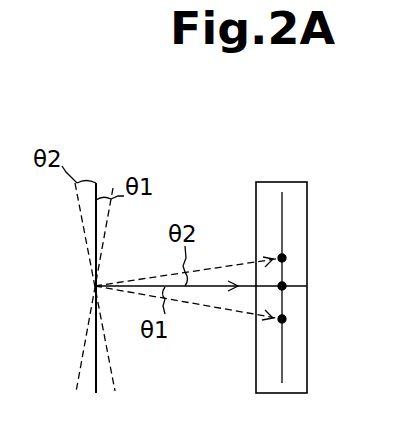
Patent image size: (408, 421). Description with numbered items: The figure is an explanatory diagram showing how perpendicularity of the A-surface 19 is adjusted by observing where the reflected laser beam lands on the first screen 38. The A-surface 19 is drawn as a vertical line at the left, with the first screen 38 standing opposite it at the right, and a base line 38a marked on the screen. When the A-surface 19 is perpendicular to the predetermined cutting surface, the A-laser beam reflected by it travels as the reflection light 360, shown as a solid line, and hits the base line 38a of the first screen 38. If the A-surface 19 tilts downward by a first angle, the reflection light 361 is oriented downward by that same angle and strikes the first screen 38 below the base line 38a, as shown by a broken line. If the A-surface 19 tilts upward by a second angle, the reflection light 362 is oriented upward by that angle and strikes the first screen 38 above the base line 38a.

The A-surface 19 is at (97, 183).
The reflection light 360 is at (205, 287).
The reflection light 361 is at (240, 312).
The reflection light 362 is at (229, 257).
The first screen 38 is at (307, 199).
The base line 38a is at (297, 286).